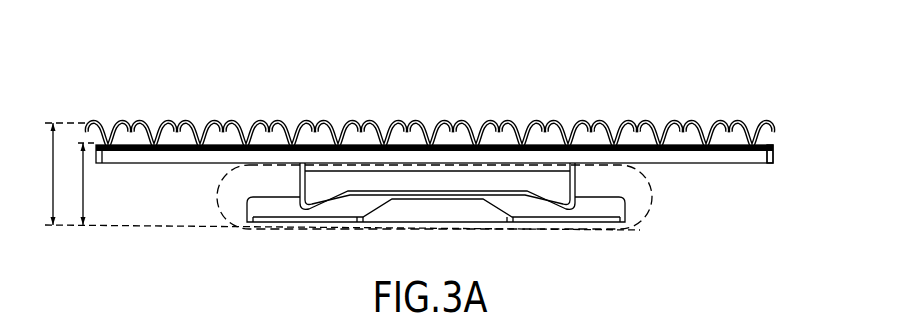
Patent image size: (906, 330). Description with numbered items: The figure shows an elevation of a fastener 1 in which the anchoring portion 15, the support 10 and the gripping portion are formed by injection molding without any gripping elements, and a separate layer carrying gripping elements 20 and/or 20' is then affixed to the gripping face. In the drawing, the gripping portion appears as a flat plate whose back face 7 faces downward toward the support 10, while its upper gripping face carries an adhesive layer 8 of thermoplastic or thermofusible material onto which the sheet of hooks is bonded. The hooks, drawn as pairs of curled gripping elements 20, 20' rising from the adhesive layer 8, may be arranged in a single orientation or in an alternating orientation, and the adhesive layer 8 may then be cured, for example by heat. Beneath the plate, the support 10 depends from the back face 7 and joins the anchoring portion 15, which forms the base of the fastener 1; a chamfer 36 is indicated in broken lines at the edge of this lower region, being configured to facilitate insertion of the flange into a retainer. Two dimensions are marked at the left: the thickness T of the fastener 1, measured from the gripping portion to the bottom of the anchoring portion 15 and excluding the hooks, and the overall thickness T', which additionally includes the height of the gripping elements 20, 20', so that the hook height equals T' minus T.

The fastener 1 is at (170, 70).
The back face 7 is at (148, 165).
The adhesive layer 8 is at (774, 150).
The support 10 is at (558, 190).
The anchoring portion 15 is at (238, 229).
The gripping elements 20 is at (430, 115).
The gripping elements 20' is at (637, 115).
The chamfer 36 is at (627, 203).
The thickness T is at (81, 184).
The overall thickness T' is at (335, 176).